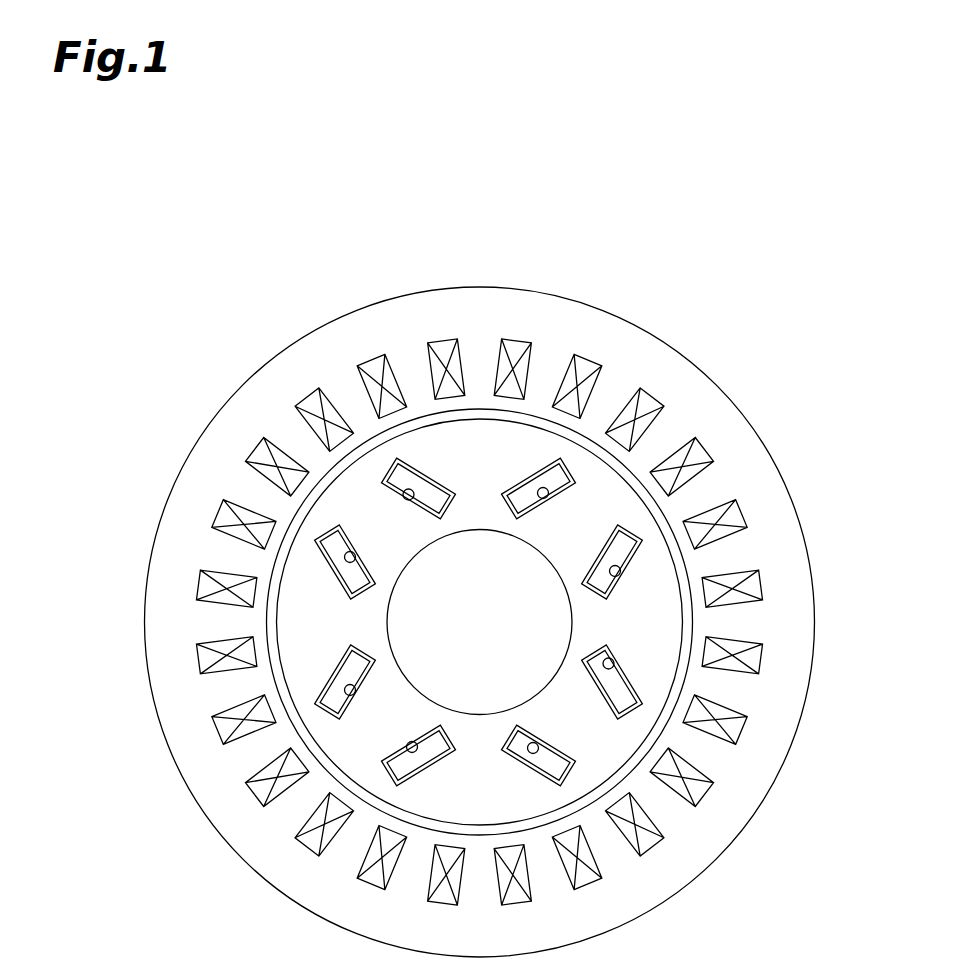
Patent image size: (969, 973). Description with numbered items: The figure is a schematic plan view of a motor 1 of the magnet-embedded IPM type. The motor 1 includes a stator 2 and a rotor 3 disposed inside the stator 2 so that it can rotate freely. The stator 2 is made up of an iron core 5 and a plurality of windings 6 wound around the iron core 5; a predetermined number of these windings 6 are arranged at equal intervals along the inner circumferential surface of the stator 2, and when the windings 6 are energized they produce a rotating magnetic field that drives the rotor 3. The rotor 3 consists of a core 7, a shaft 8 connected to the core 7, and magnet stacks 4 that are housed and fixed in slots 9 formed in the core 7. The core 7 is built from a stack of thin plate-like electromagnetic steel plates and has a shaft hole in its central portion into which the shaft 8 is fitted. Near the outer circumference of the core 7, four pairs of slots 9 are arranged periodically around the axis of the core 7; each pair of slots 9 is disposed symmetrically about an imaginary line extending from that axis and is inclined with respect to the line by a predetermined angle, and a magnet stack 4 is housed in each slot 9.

The motor 1 is at (199, 248).
The stator 2 is at (583, 215).
The rotor 3 is at (885, 502).
The magnet stack 4 is at (534, 484).
The iron core 5 is at (487, 315).
The windings 6 is at (630, 403).
The core 7 is at (597, 513).
The shaft 8 is at (497, 683).
The slot 9 is at (409, 501).